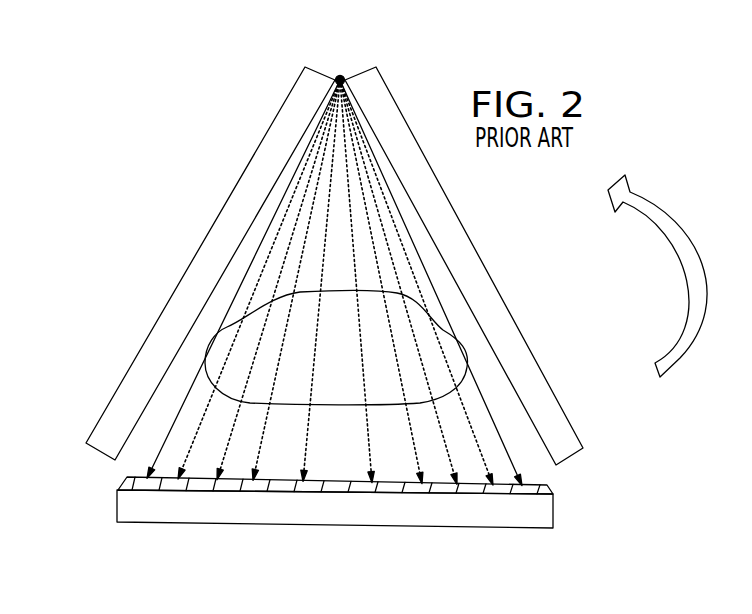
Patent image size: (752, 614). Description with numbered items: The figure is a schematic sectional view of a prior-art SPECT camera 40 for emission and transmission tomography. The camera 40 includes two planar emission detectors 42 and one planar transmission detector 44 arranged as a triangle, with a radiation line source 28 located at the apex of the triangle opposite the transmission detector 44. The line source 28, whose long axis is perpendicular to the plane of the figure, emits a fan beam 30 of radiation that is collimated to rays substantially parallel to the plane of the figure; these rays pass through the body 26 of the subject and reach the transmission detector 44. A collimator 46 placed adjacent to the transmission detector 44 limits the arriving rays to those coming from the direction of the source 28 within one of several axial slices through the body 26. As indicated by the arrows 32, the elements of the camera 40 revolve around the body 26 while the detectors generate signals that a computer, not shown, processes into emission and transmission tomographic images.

The SPECT camera 40 is at (136, 126).
The planar emission detectors 42 is at (192, 267).
The radiation line source 28 is at (339, 79).
The fan beam 30 is at (163, 441).
The body 26 is at (452, 358).
The arrows 32 is at (678, 360).
The collimator 46 is at (548, 486).
The planar transmission detector 44 is at (465, 518).